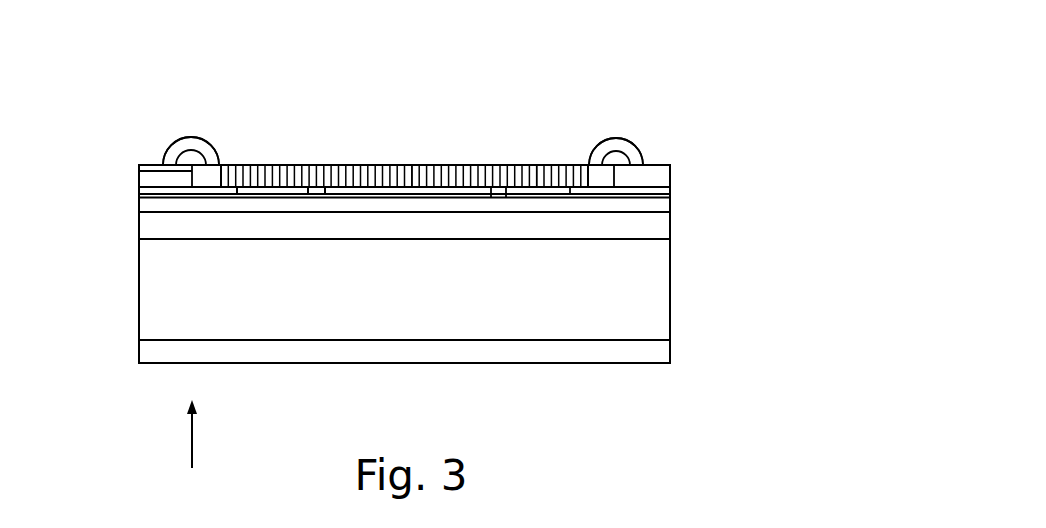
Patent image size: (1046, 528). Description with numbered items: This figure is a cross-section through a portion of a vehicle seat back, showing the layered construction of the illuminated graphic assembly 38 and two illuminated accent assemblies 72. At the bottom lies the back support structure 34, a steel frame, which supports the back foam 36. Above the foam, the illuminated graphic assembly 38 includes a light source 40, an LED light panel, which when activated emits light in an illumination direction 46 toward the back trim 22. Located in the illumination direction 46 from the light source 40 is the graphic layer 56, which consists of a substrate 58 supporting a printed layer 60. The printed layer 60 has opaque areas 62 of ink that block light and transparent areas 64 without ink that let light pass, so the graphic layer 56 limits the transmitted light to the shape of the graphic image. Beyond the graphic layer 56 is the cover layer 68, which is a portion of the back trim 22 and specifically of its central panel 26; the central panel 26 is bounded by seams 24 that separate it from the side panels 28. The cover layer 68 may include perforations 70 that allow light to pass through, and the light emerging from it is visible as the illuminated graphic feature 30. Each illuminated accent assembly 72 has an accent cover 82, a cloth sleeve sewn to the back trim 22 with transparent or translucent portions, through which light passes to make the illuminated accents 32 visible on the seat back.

The back trim 22 is at (672, 167).
The seams 24 is at (139, 172).
The central panel 26 is at (467, 165).
The side panels 28 is at (147, 165).
The illuminated graphic feature 30 is at (392, 165).
The illuminated accents 32 is at (185, 137).
The back support structure 34 is at (672, 352).
The back foam 36 is at (672, 278).
The illuminated graphic assembly 38 is at (103, 247).
The light source 40 is at (672, 225).
The illumination direction 46 is at (193, 433).
The graphic layer 56 is at (139, 198).
The substrate 58 is at (672, 200).
The printed layer 60 is at (672, 192).
The opaque areas 62 is at (316, 187).
The transparent areas 64 is at (265, 188).
The cover layer 68 is at (540, 165).
The perforations 70 is at (415, 180).
The illuminated accent assemblies 72 is at (214, 110).
The accent cover 82 is at (215, 147).